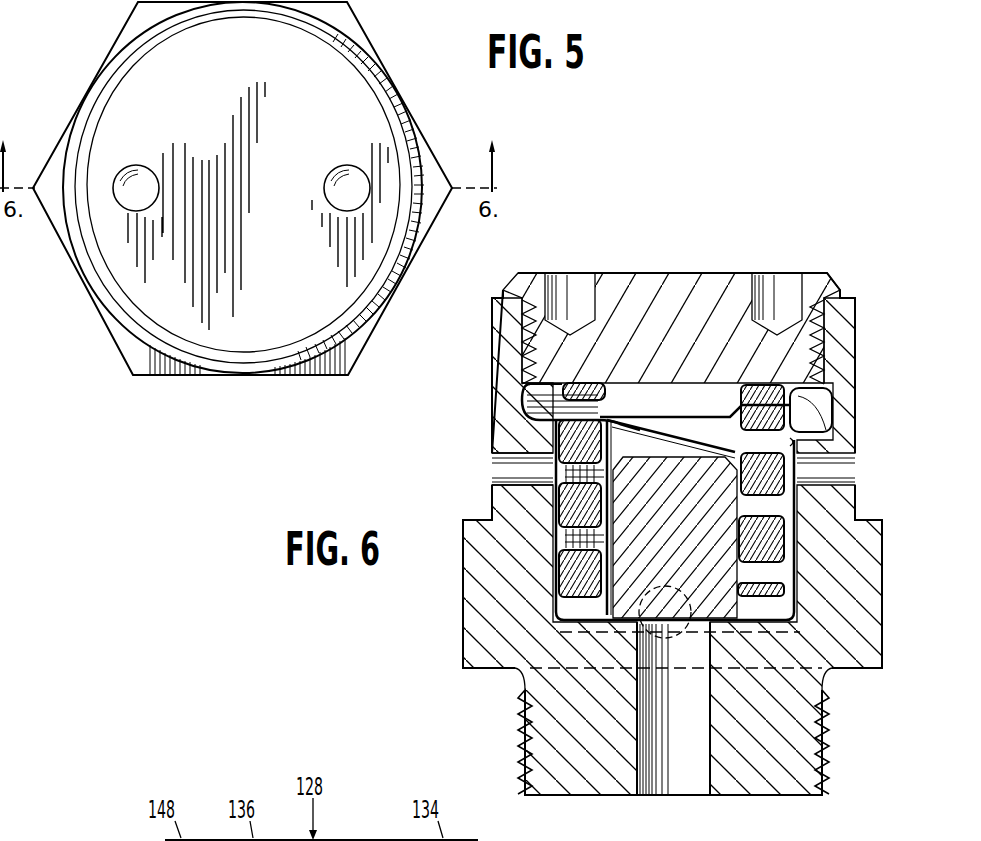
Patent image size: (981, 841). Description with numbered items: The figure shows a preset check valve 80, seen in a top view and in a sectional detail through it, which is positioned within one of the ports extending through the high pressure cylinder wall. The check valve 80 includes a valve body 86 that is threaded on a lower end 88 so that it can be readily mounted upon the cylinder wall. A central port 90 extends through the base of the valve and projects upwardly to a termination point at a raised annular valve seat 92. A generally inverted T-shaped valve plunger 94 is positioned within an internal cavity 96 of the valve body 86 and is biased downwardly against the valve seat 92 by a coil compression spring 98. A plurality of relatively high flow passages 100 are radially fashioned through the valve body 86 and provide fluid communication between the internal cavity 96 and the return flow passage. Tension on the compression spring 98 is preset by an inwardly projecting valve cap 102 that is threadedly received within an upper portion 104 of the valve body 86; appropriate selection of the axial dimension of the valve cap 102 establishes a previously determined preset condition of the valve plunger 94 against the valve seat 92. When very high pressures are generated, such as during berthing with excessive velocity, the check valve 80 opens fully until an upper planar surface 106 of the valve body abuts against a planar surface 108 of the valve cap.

In FIG. 5, the check valve 80 is at (386, 60).
In FIG. 6, the check valve 80 is at (685, 252).
In FIG. 6, the valve body 86 is at (465, 577).
In FIG. 6, the lower end 88 is at (520, 714).
In FIG. 6, the central port 90 is at (710, 777).
In FIG. 6, the raised annular valve seat 92 is at (800, 625).
In FIG. 6, the valve plunger 94 is at (495, 477).
In FIG. 6, the internal cavity 96 is at (793, 442).
In FIG. 6, the coil compression spring 98 is at (812, 402).
In FIG. 6, the high flow passages 100 is at (787, 570).
In FIG. 5, the valve cap 102 is at (216, 116).
In FIG. 6, the valve cap 102 is at (646, 272).
In FIG. 6, the upper portion 104 is at (533, 293).
In FIG. 6, the upper planar surface 106 is at (683, 430).
In FIG. 6, the planar surface 108 is at (645, 414).